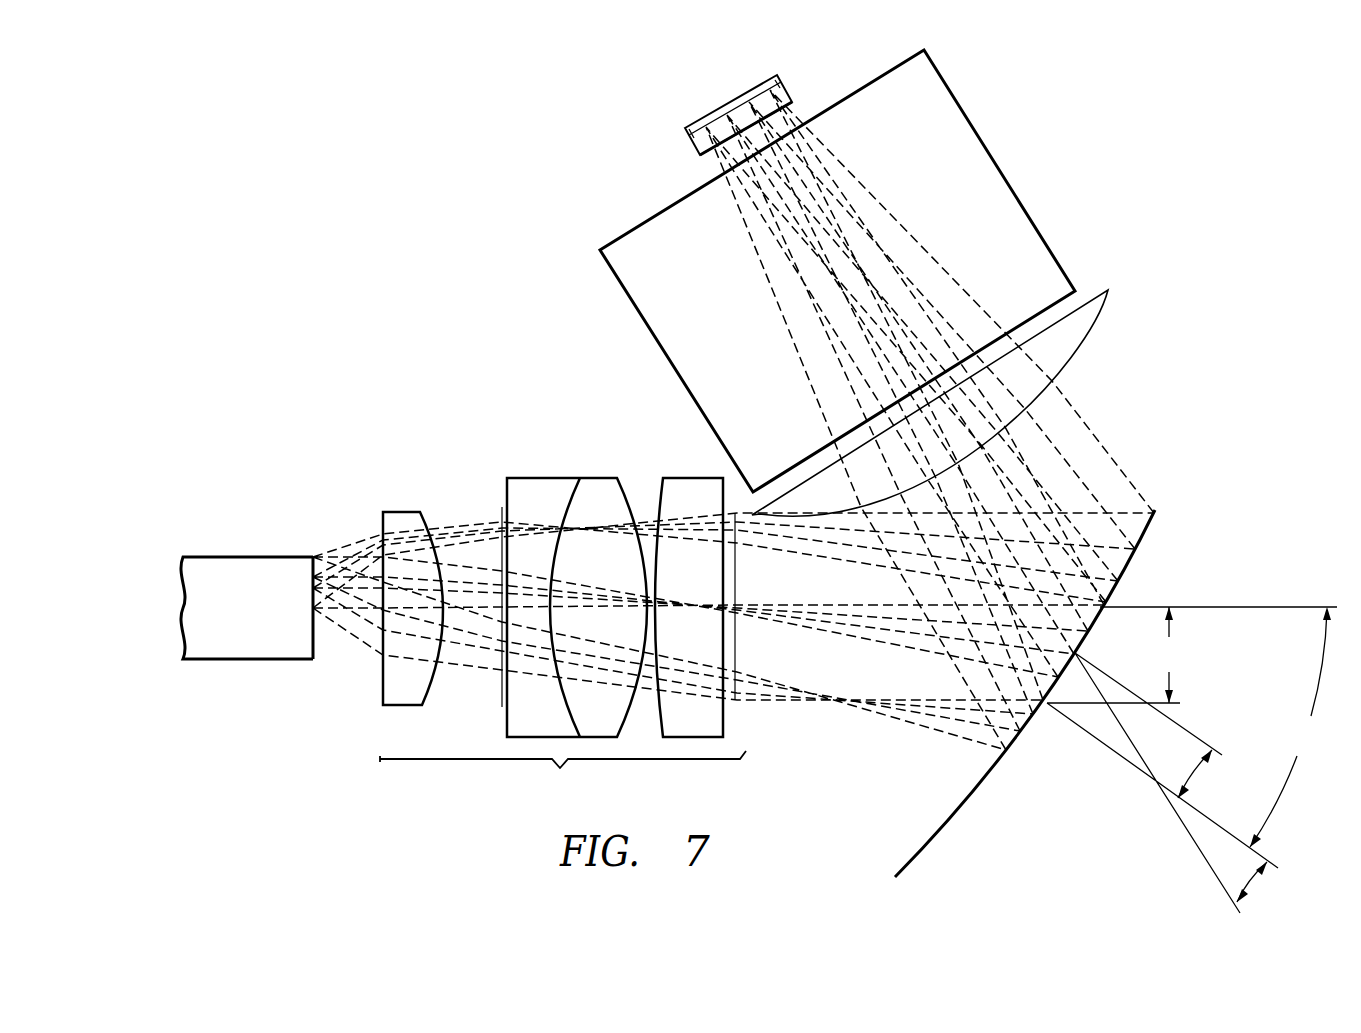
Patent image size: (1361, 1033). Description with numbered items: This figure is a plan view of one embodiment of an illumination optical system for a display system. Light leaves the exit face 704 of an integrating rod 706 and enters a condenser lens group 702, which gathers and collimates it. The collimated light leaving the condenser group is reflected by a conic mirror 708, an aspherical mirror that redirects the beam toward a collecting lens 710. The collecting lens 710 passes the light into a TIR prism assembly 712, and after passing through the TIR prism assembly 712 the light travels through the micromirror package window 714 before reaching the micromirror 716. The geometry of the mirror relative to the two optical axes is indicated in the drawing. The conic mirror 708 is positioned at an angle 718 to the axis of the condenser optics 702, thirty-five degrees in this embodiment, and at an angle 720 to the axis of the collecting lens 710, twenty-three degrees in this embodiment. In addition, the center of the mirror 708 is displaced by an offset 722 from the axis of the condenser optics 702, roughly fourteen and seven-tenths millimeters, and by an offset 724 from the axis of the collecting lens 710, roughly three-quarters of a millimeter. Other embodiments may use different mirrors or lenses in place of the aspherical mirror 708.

The condenser lens group 702 is at (563, 638).
The exit face 704 is at (314, 639).
The integrating rod 706 is at (248, 557).
The conic mirror 708 is at (955, 808).
The collecting lens 710 is at (1084, 330).
The TIR prism assembly 712 is at (998, 168).
The micromirror package window 714 is at (807, 72).
The micromirror 716 is at (700, 119).
The angle 718 is at (1290, 727).
The angle 720 is at (1253, 887).
The offset 722 is at (1169, 655).
The offset 724 is at (1197, 773).